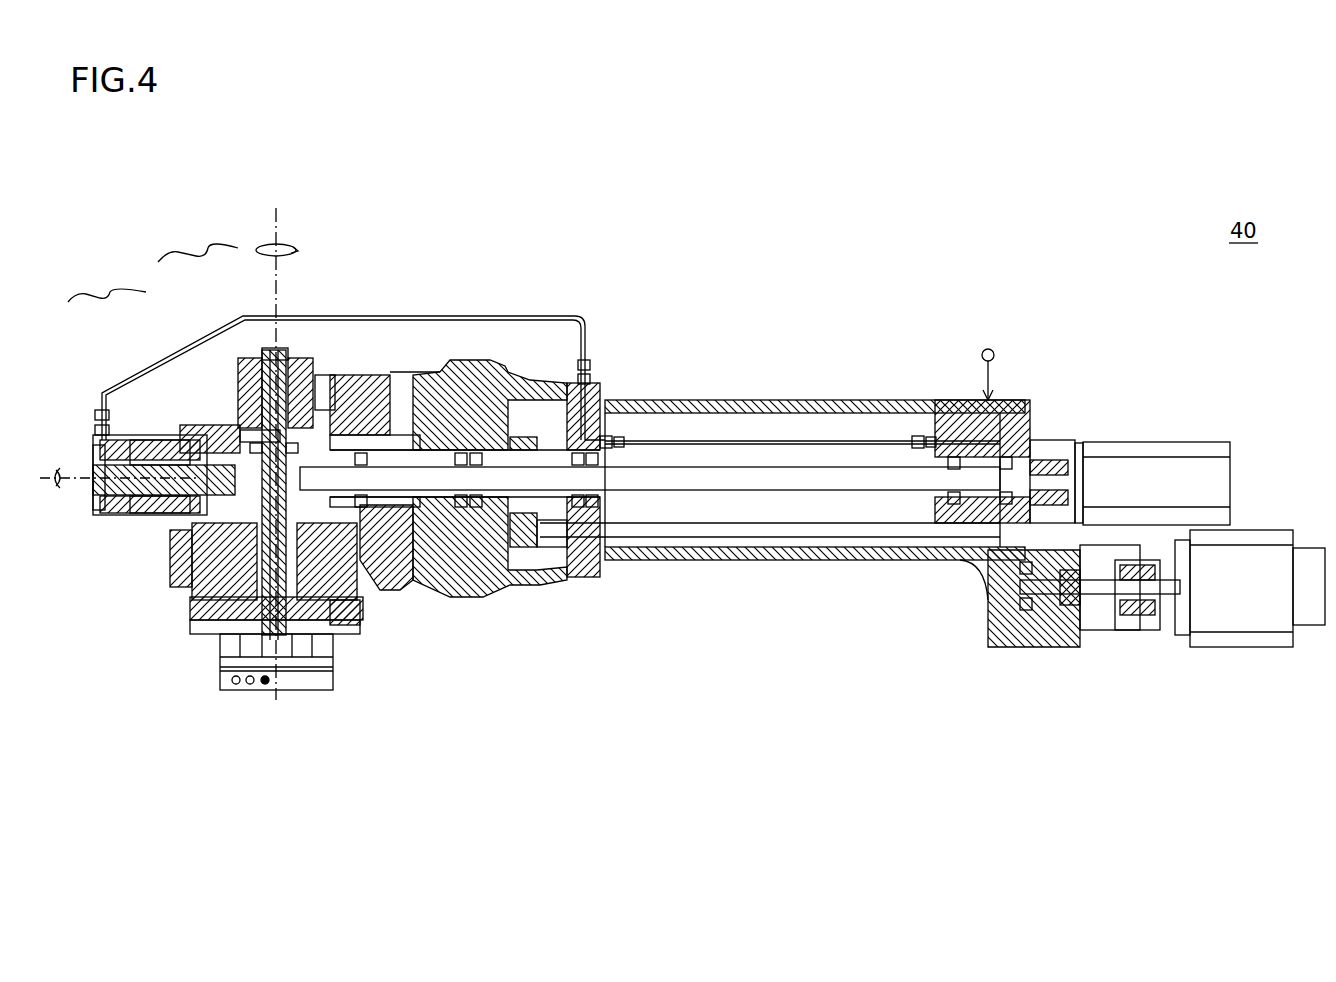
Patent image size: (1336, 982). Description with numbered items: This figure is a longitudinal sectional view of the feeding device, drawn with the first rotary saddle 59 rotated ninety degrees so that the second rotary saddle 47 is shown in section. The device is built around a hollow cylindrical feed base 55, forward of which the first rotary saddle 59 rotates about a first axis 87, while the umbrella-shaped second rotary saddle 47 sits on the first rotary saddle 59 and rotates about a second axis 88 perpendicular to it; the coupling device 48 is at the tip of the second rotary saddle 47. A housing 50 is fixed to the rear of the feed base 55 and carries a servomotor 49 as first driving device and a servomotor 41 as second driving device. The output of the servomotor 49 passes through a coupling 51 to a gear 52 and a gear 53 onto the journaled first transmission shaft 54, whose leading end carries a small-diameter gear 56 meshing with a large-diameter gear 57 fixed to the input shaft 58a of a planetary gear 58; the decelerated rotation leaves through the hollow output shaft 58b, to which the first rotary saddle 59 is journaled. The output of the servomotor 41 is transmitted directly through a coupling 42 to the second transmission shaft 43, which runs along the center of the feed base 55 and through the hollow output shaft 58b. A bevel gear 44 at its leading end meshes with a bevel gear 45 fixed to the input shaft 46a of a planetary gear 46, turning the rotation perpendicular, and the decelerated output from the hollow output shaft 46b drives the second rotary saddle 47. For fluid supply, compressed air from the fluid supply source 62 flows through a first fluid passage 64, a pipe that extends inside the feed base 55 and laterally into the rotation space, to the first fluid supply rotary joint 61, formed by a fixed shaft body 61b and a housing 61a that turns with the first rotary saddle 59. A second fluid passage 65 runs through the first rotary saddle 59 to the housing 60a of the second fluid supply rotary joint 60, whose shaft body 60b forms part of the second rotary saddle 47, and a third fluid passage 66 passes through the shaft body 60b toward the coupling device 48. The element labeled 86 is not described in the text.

The servomotor 41 is at (1155, 442).
The coupling 42 is at (1045, 445).
The second transmission shaft 43 is at (855, 467).
The bevel gear 44 is at (262, 486).
The bevel gear 45 is at (175, 520).
The planetary gear 46 is at (175, 575).
The input shaft 46a is at (170, 560).
The hollow output shaft 46b is at (190, 606).
The second rotary saddle 47 is at (362, 622).
The coupling device 48 is at (218, 660).
The servomotor 49 is at (1255, 648).
The housing 50 is at (1025, 650).
The coupling 51 is at (1140, 605).
The gear 52 is at (1030, 597).
The gear 53 is at (1000, 585).
The first transmission shaft 54 is at (755, 560).
The feed base 55 is at (762, 400).
The small-diameter gear 56 is at (530, 560).
The large-diameter gear 57 is at (585, 383).
The planetary gear 58 is at (470, 362).
The input shaft 58a is at (520, 437).
The output shaft 58b is at (395, 575).
The first rotary saddle 59 is at (352, 375).
The second fluid supply rotary joint 60 is at (198, 241).
The housing 60a is at (250, 400).
The shaft body 60b is at (282, 360).
The first fluid supply rotary joint 61 is at (107, 281).
The housing 61a is at (150, 440).
The shaft body 61b is at (92, 440).
The fluid supply source 62 is at (988, 348).
The first fluid passage 64 is at (420, 316).
The second fluid passage 65 is at (205, 425).
The third fluid passage 66 is at (215, 634).
The housing 86 is at (1090, 630).
The first axis 87 is at (57, 492).
The second axis 88 is at (282, 222).